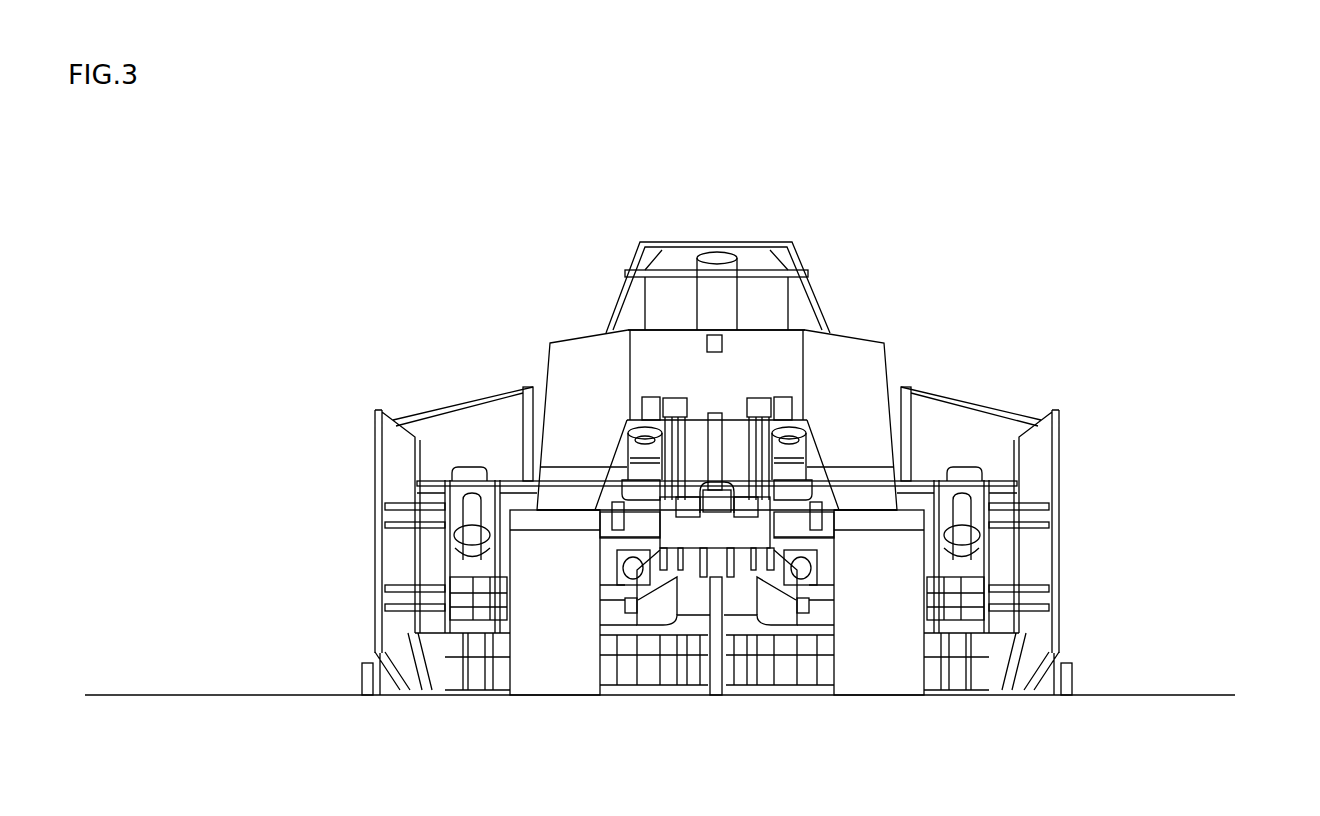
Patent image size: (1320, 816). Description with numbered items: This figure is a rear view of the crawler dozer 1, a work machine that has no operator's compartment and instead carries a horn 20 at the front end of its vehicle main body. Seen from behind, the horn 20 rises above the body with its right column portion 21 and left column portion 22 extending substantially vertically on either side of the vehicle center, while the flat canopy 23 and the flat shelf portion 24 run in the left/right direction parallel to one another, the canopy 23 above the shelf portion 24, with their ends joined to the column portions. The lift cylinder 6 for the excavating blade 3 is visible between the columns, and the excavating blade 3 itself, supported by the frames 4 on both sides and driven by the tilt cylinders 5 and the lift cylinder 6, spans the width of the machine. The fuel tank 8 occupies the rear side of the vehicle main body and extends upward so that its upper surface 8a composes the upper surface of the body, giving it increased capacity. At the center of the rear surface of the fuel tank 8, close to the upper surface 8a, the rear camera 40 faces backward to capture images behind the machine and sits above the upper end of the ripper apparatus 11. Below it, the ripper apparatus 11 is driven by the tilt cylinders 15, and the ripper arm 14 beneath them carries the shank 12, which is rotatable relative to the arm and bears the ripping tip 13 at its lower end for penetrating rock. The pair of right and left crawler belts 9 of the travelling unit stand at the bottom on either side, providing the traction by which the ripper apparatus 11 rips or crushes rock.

The crawler dozer 1 is at (921, 182).
The excavating blade 3 is at (448, 433).
The frames 4 is at (971, 597).
The tilt cylinders 5 is at (984, 530).
The lift cylinder 6 is at (718, 297).
The fuel tank 8 is at (847, 350).
The upper surface 8a is at (767, 327).
The crawler belts 9 is at (874, 698).
The ripper apparatus 11 is at (680, 623).
The shank 12 is at (718, 620).
The ripping tip 13 is at (716, 620).
The ripper arm 14 is at (782, 613).
The tilt cylinders 15 is at (797, 478).
The horn 20 is at (796, 240).
The right column portion 21 is at (798, 287).
The left column portion 22 is at (630, 287).
The canopy 23 is at (708, 252).
The shelf portion 24 is at (672, 272).
The rear camera 40 is at (707, 343).